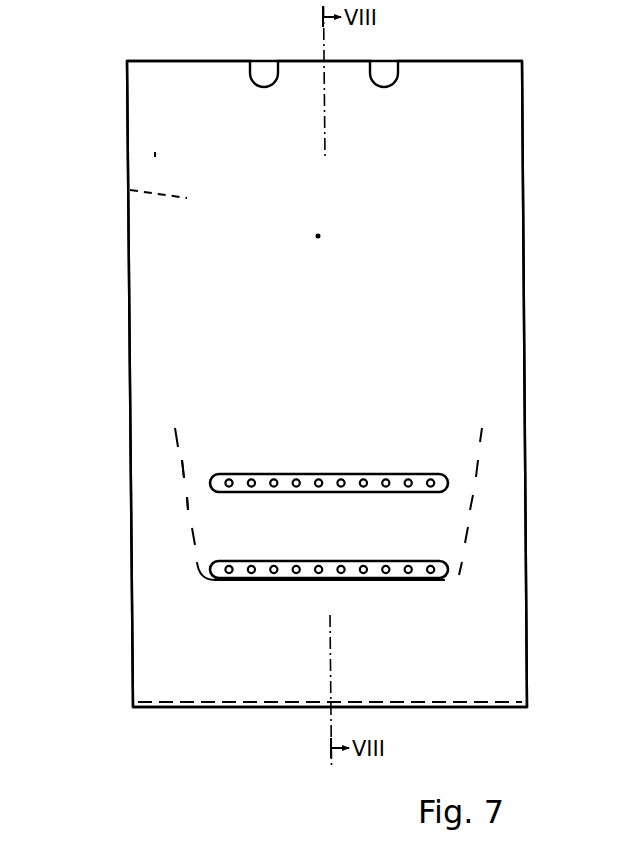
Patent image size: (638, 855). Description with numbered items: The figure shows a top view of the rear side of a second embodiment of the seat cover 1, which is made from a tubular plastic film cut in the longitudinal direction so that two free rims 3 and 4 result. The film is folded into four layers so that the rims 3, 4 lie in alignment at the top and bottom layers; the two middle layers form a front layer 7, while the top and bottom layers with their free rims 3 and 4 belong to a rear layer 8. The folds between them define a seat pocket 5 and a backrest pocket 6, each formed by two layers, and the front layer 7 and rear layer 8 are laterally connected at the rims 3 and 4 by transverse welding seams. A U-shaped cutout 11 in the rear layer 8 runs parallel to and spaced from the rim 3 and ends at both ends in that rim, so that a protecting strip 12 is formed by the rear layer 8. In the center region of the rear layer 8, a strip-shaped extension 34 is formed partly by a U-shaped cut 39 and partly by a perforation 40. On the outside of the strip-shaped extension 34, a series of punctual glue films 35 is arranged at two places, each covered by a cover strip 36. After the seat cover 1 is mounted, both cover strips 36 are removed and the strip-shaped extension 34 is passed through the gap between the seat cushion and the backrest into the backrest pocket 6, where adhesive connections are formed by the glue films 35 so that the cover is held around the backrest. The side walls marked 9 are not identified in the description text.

The seat cover 1 is at (97, 108).
The free rim 3 is at (222, 704).
The free rim 4 is at (180, 61).
The seat pocket 5 is at (260, 672).
The backrest pocket 6 is at (318, 236).
The front layer 7 is at (130, 190).
The rear layer 8 is at (155, 157).
The side wall 9 is at (128, 312).
The U-shaped cutout 11 is at (460, 574).
The protecting strip 12 is at (155, 460).
The strip-shaped extension 34 is at (366, 520).
The punctual glue films 35 is at (418, 440).
The cover strip 36 is at (283, 486).
The U-shaped cut 39 is at (308, 583).
The perforation 40 is at (187, 509).